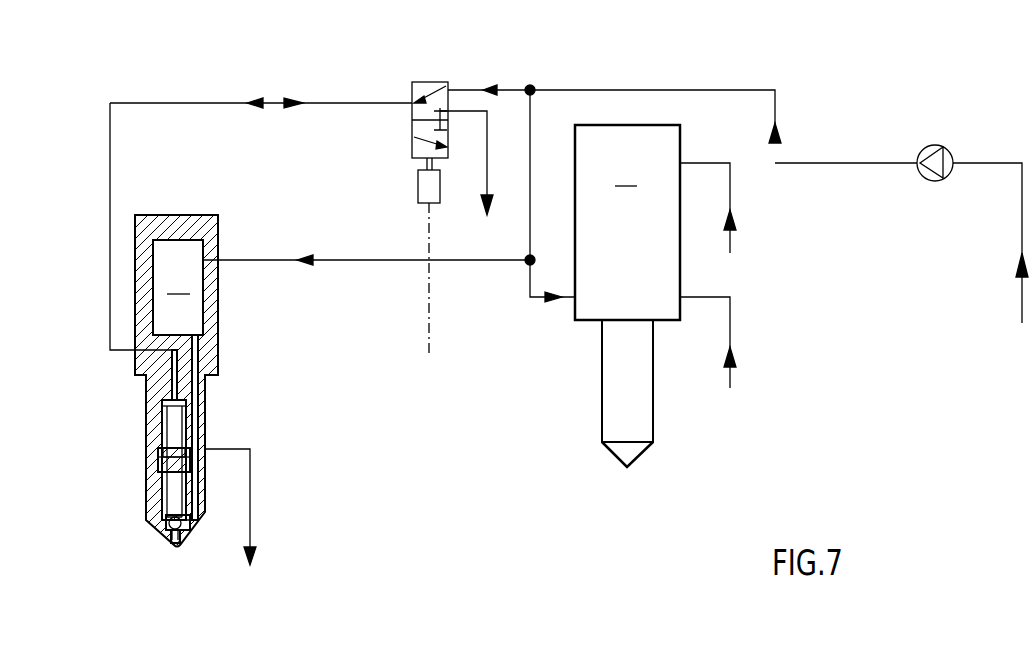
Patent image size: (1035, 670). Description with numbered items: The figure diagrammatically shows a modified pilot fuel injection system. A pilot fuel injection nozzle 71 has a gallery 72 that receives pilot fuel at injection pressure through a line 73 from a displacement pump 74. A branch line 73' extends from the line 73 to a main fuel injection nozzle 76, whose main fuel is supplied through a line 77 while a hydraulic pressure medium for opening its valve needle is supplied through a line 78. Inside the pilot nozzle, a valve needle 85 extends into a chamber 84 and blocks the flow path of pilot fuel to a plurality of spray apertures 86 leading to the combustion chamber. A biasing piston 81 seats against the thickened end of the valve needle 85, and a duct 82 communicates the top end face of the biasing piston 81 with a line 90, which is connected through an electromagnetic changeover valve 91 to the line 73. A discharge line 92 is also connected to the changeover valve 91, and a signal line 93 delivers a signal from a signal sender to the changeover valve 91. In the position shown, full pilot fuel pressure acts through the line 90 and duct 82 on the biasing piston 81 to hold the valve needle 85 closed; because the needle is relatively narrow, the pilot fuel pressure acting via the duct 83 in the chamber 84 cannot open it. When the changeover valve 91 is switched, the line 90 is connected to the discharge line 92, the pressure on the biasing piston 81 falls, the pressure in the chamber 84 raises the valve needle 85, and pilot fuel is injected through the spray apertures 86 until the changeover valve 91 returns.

The pilot fuel injection nozzle 71 is at (170, 207).
The gallery 72 is at (178, 287).
The line 73 is at (615, 206).
The branch line 73' is at (526, 205).
The displacement pump 74 is at (952, 155).
The main fuel injection nozzle 76 is at (627, 296).
The line 77 is at (731, 200).
The line 78 is at (731, 318).
The biasing piston 81 is at (172, 437).
The duct 82 is at (170, 388).
The duct 83 is at (183, 408).
The chamber 84 is at (168, 527).
The valve needle 85 is at (172, 492).
The spray apertures 86 is at (183, 543).
The line 90 is at (150, 100).
The electromagnetic changeover valve 91 is at (419, 74).
The discharge line 92 is at (488, 154).
The signal line 93 is at (427, 318).